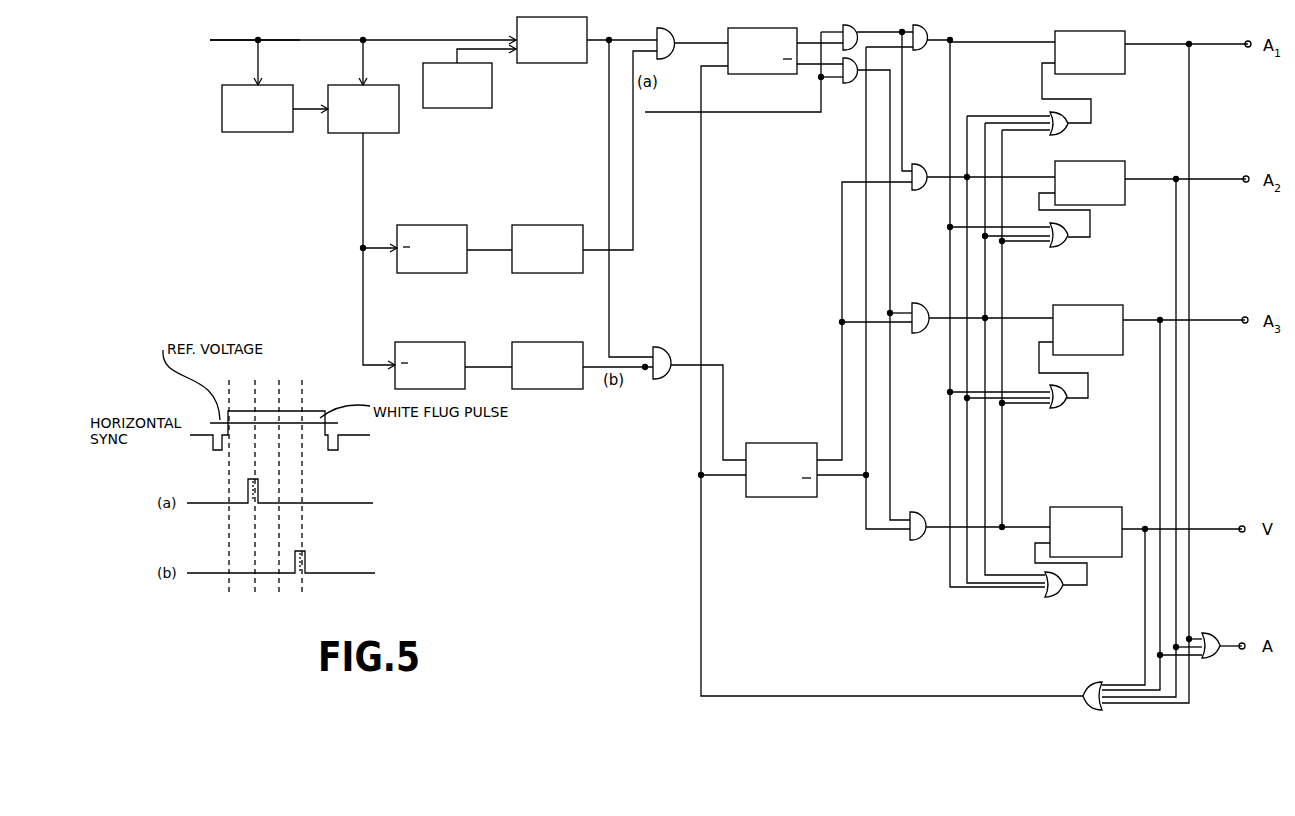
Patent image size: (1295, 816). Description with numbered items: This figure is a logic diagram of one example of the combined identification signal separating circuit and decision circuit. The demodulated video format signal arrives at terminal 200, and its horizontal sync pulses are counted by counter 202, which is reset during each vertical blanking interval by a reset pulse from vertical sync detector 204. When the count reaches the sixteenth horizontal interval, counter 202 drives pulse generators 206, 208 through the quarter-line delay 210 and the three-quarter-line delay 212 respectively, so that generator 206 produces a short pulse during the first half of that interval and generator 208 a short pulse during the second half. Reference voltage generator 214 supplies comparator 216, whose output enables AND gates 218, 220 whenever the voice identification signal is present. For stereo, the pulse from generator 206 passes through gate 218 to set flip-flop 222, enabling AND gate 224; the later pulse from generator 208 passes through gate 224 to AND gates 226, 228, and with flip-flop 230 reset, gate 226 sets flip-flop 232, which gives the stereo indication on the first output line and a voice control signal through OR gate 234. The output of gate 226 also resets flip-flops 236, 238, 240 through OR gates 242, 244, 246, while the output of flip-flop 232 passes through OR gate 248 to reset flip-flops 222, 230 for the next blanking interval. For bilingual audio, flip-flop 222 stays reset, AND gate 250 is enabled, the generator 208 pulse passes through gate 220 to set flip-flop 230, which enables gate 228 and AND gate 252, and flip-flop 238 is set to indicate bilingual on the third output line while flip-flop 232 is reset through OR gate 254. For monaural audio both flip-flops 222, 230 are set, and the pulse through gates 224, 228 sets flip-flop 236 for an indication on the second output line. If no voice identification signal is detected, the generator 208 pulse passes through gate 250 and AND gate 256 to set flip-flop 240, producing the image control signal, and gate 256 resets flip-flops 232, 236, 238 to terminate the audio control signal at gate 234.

The terminal 200 is at (221, 38).
The counter 202 is at (378, 85).
The vertical sync detector 204 is at (270, 85).
The pulse generator 206 is at (551, 225).
The pulse generator 208 is at (567, 342).
The H/4 delay 210 is at (451, 225).
The 3H/4 delay 212 is at (451, 342).
The reference voltage generator 214 is at (492, 92).
The comparator 216 is at (576, 0).
The AND gate 218 is at (671, 28).
The AND gate 220 is at (667, 380).
The flip-flop 222 is at (778, 28).
The AND gate 224 is at (851, 25).
The AND gate 226 is at (926, 25).
The AND gate 228 is at (925, 164).
The flip-flop 230 is at (771, 497).
The flip-flop 232 is at (1106, 31).
The OR gate 234 is at (1207, 632).
The flip-flop 236 is at (1110, 161).
The flip-flop 238 is at (1090, 305).
The flip-flop 240 is at (1090, 507).
The OR gate 242 is at (1063, 247).
The OR gate 244 is at (1062, 408).
The OR gate 246 is at (1056, 597).
The OR gate 248 is at (1093, 682).
The AND gate 250 is at (856, 81).
The AND gate 252 is at (924, 303).
The OR gate 254 is at (1048, 113).
The AND gate 256 is at (931, 511).